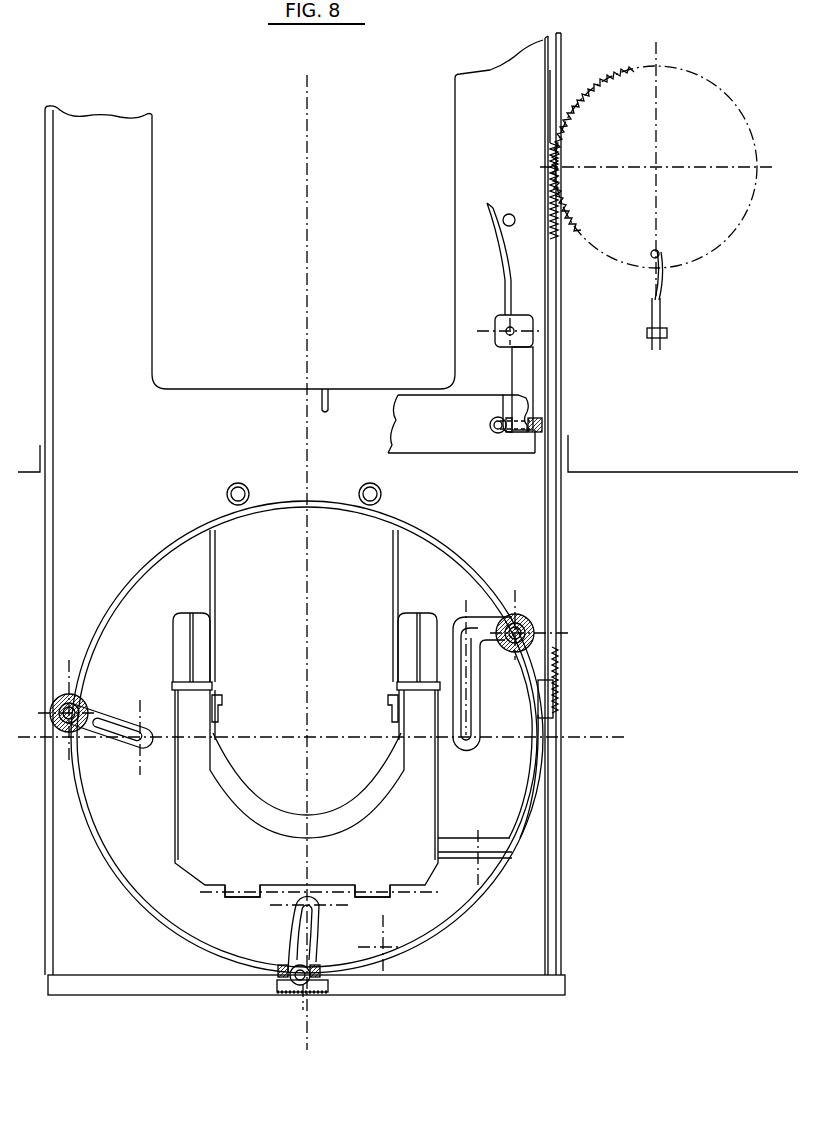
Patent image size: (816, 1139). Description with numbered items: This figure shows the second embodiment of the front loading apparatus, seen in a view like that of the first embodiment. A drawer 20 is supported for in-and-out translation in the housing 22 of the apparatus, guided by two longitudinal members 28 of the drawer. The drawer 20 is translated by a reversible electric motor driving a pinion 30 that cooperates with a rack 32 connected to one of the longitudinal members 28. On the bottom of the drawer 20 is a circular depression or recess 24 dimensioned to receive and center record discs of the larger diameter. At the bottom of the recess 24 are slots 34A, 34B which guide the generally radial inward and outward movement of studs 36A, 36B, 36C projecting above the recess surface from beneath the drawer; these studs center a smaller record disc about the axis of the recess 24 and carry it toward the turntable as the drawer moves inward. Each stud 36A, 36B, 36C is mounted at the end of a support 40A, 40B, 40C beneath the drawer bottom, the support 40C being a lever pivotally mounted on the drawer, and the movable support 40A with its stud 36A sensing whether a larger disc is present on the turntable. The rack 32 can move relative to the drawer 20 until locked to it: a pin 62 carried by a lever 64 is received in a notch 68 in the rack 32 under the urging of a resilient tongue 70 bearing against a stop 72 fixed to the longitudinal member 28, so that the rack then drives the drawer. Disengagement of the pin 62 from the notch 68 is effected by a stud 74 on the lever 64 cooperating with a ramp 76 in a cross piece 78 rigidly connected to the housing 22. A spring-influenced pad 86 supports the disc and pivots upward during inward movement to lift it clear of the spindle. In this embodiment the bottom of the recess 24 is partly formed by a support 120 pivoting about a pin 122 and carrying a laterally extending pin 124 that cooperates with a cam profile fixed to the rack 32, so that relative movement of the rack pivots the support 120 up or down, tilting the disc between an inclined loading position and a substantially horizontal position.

The drawer 20 is at (532, 955).
The housing 22 is at (27, 473).
The circular depression or recess 24 is at (438, 905).
The longitudinal member 28 is at (99, 132).
The pinion 30 is at (698, 240).
The rack 32 is at (556, 572).
The slot 34A is at (475, 680).
The slot 34B is at (118, 720).
The stud 36A is at (535, 617).
The stud 36B is at (70, 727).
The stud 36C is at (310, 990).
The support 40A is at (507, 610).
The support 40B is at (76, 695).
The support 40C is at (275, 978).
The pin 62 is at (514, 330).
The lever 64 is at (525, 360).
The notch 68 is at (505, 397).
The resilient tongue 70 is at (489, 204).
The stop 72 is at (511, 216).
The stud 74 is at (502, 437).
The ramp 76 is at (509, 434).
The cross piece 78 is at (433, 440).
The pad 86 is at (200, 655).
The support 120 is at (200, 827).
The pin 122 is at (215, 893).
The pin 124 is at (500, 857).